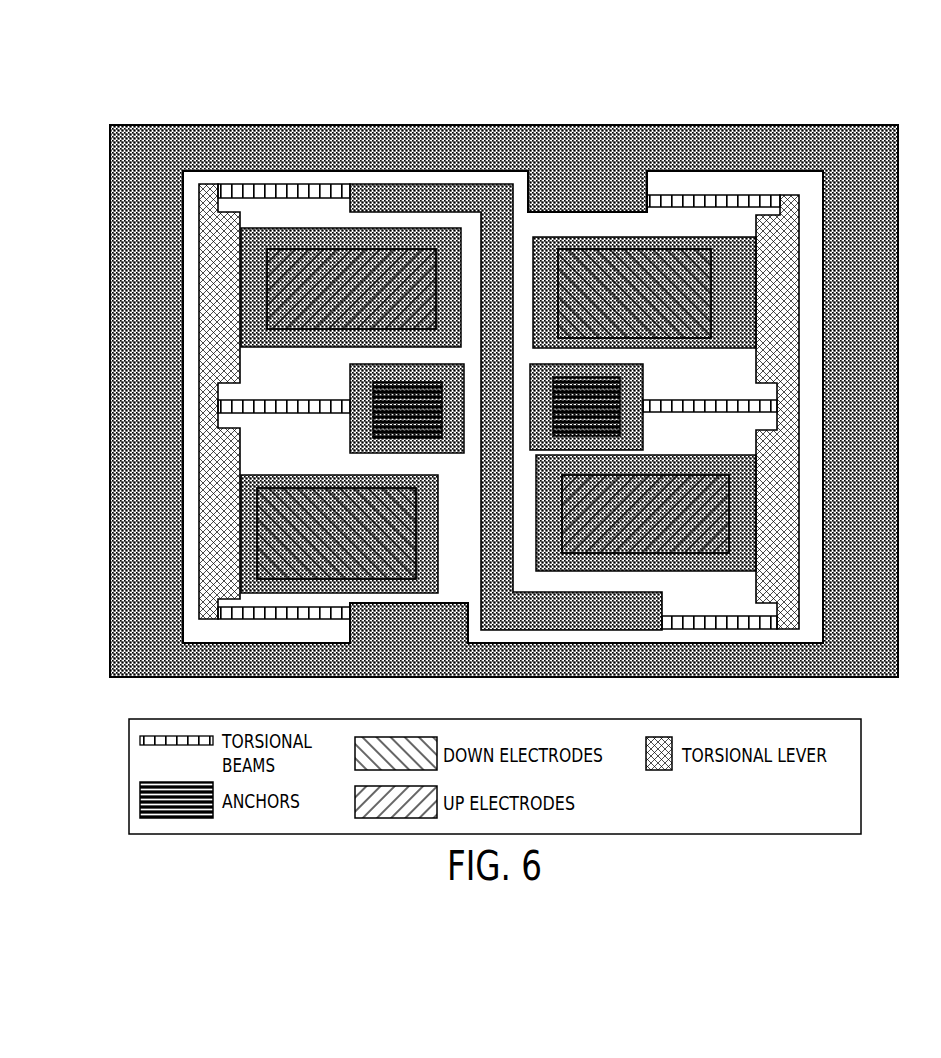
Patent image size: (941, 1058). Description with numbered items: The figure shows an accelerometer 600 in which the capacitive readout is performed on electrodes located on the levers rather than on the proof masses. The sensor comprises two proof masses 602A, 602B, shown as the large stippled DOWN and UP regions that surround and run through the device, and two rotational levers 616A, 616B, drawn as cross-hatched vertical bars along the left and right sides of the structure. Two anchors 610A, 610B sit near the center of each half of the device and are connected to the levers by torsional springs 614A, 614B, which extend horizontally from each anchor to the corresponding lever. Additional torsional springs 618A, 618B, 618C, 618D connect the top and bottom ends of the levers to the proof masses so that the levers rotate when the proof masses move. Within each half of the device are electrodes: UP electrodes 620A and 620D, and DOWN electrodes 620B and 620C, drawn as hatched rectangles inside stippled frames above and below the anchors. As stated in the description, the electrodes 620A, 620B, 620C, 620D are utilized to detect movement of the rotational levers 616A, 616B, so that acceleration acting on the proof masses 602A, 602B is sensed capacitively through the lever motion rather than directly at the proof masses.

The accelerometer 600 is at (886, 109).
The proof mass 602A is at (118, 255).
The proof mass 602B is at (370, 188).
The anchor 610A is at (352, 395).
The anchor 610B is at (635, 380).
The torsional spring 614A is at (278, 405).
The torsional spring 614B is at (743, 407).
The rotational lever 616A is at (233, 443).
The rotational lever 616B is at (755, 447).
The torsional spring 618A is at (255, 188).
The torsional spring 618B is at (733, 198).
The torsional spring 618C is at (262, 616).
The torsional spring 618D is at (718, 624).
The UP electrode C21 620A is at (323, 270).
The DOWN electrode C11 620B is at (643, 257).
The DOWN electrode C11 620C is at (342, 497).
The UP electrode C21 620D is at (678, 483).